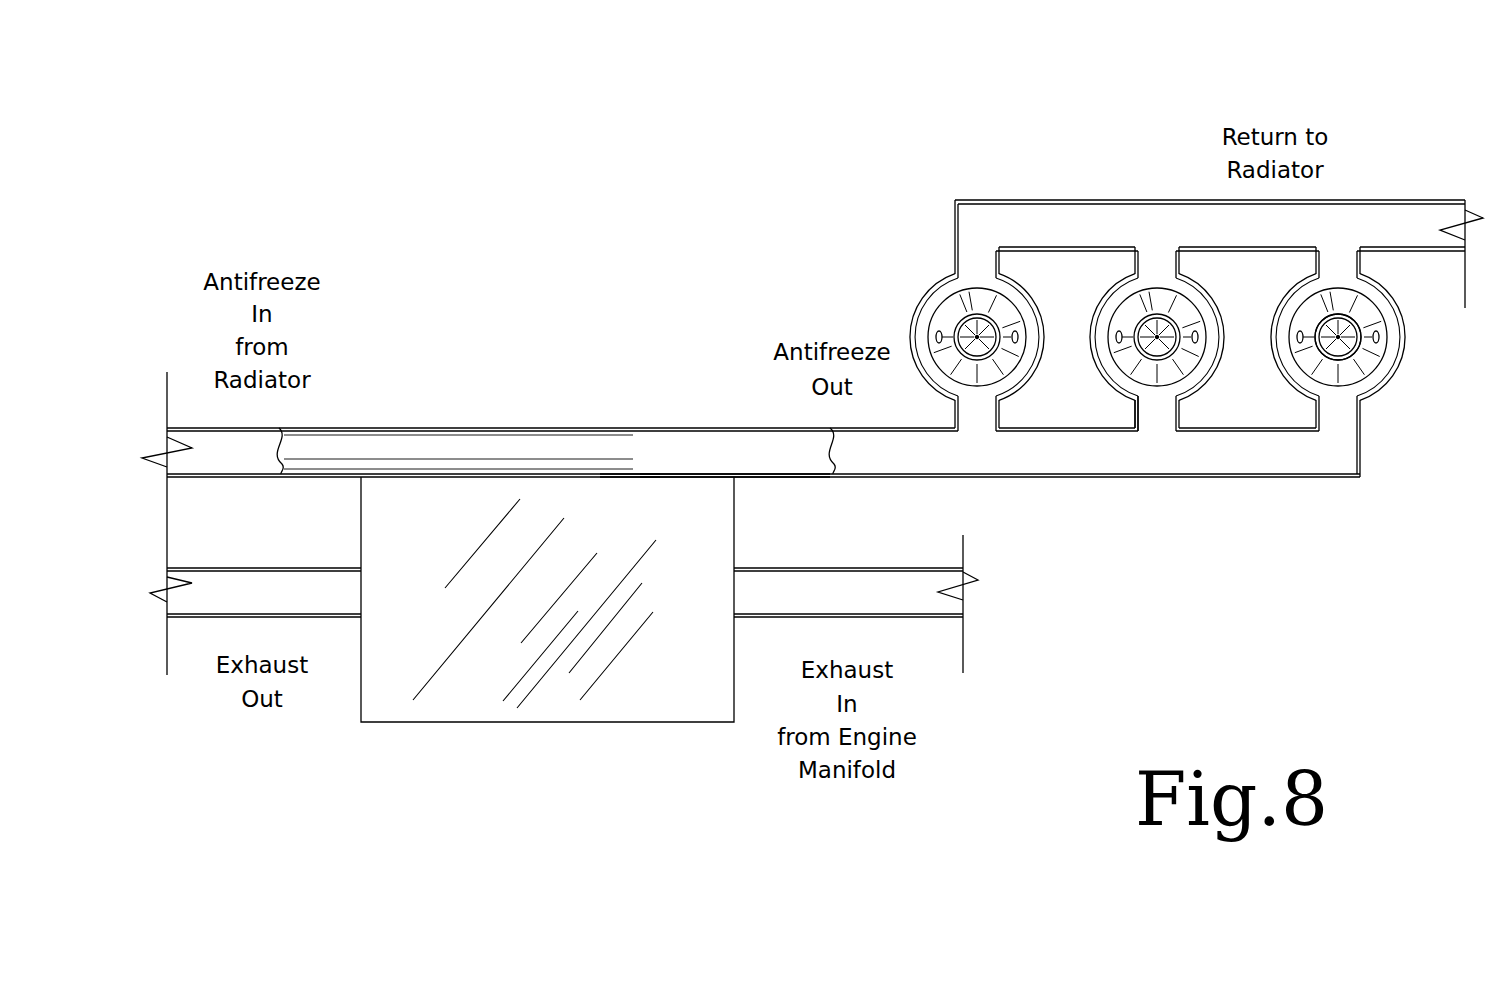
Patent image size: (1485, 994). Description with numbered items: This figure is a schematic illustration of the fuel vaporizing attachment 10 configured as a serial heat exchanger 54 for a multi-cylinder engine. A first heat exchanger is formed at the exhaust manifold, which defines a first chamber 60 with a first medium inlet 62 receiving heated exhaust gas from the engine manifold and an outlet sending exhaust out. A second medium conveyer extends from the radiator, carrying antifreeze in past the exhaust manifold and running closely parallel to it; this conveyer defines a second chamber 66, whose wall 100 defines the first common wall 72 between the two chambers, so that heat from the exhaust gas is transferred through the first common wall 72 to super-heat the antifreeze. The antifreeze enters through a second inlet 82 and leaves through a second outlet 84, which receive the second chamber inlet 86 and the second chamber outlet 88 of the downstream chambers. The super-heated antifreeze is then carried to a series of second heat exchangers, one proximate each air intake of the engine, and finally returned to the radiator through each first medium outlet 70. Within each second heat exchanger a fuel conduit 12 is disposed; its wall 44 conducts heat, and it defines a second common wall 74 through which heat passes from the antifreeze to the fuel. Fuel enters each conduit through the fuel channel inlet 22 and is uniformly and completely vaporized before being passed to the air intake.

The fuel vaporizing attachment 10 is at (560, 352).
The fuel conduit 12 is at (1363, 343).
The fuel channel inlet 22 is at (951, 322).
The wall 44 is at (200, 430).
The serial heat exchanger 54 is at (1040, 148).
The first chamber 60 is at (510, 723).
The first medium inlet 62 is at (742, 627).
The second chamber 66 is at (1385, 393).
The first medium outlet 70 is at (354, 624).
The first common wall 72 is at (653, 478).
The second common wall 74 is at (1298, 289).
The second inlet 82 is at (345, 425).
The second outlet 84 is at (742, 421).
The second chamber inlet 86 is at (1005, 405).
The second chamber outlet 88 is at (940, 272).
The wall 100 is at (712, 479).